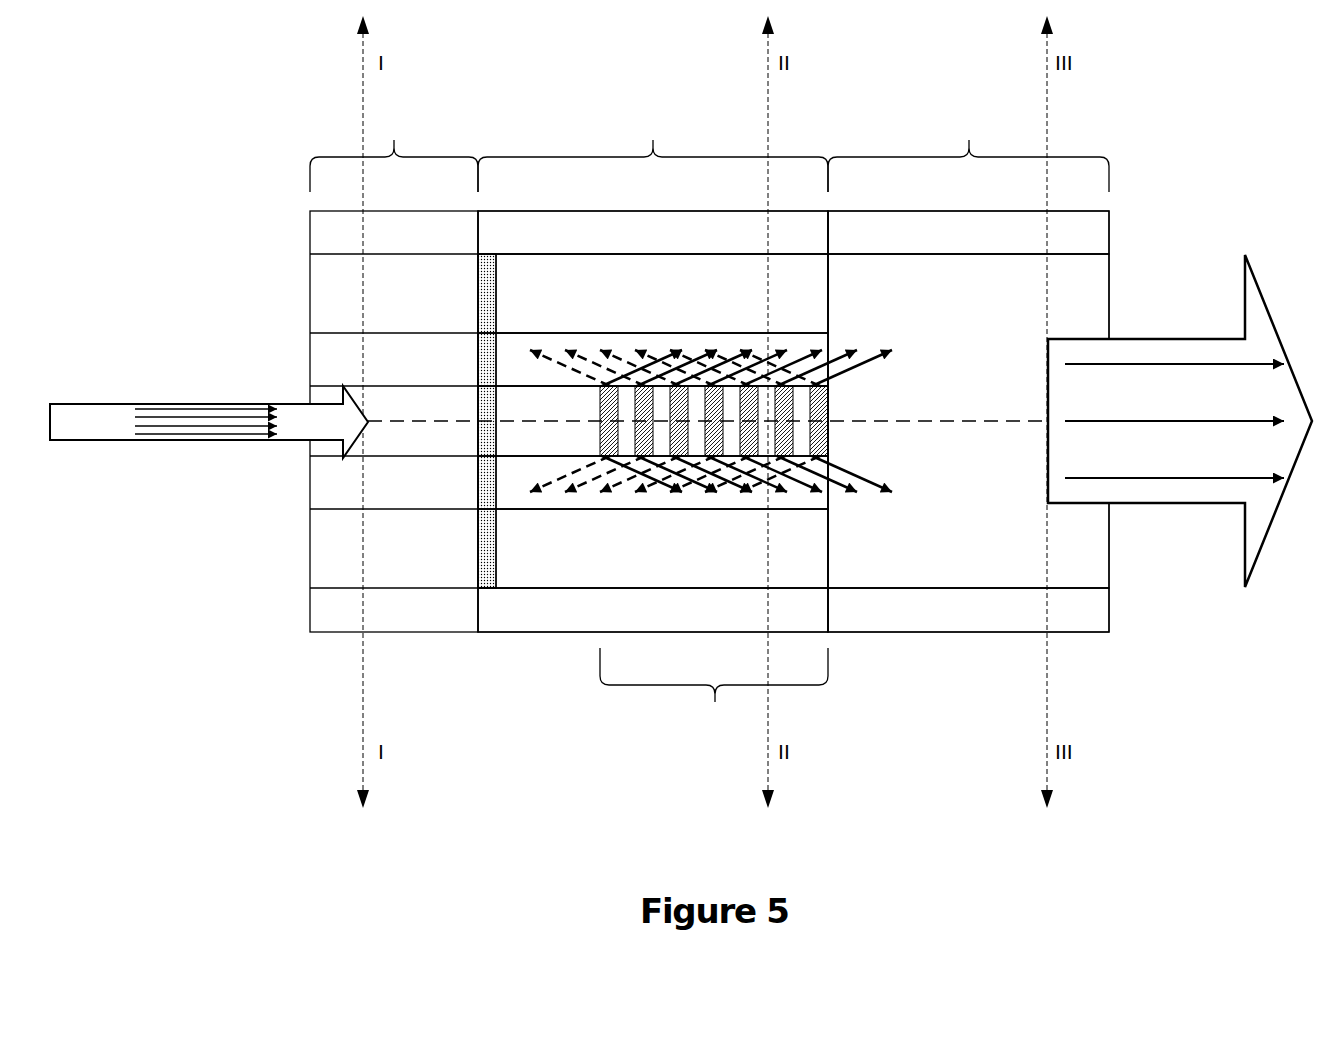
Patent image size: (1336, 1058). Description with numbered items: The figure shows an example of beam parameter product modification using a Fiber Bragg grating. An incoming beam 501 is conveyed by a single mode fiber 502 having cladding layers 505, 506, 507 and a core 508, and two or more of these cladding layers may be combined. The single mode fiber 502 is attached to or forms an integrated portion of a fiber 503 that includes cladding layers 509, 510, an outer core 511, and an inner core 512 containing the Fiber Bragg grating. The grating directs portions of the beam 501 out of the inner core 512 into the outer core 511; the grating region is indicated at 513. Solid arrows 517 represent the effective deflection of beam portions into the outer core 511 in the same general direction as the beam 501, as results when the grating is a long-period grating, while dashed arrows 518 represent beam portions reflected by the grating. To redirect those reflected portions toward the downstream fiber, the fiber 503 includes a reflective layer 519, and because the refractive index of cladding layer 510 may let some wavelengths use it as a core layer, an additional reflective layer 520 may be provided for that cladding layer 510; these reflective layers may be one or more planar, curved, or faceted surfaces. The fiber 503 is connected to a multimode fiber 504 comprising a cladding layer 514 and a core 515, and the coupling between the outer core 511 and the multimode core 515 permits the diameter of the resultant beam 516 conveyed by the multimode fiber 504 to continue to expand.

The beam 501 is at (117, 402).
The single mode fiber 502 is at (394, 369).
The fiber 503 is at (653, 369).
The multimode fiber 504 is at (968, 369).
The cladding layer 505 is at (310, 240).
The cladding layer 506 is at (310, 295).
The cladding layer 507 is at (310, 360).
The core 508 is at (316, 448).
The cladding layer 509 is at (653, 421).
The cladding layer 510 is at (653, 421).
The outer core 511 is at (612, 343).
The inner core 512 is at (653, 421).
The grating structure 513 is at (714, 562).
The cladding layer 514 is at (1109, 227).
The core 515 is at (1109, 312).
The resultant beam 516 is at (1155, 508).
The solid arrows 517 is at (892, 493).
The dashed arrows 518 is at (568, 495).
The reflective layer 519 is at (487, 493).
The reflective layer 520 is at (495, 555).